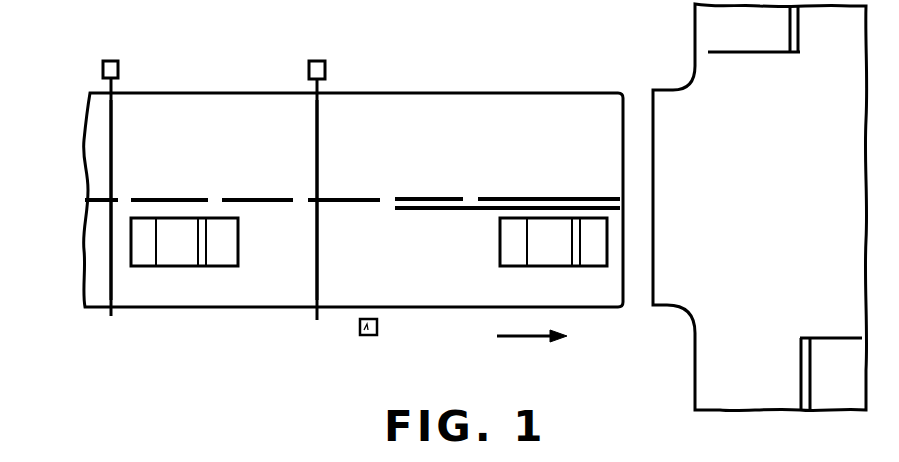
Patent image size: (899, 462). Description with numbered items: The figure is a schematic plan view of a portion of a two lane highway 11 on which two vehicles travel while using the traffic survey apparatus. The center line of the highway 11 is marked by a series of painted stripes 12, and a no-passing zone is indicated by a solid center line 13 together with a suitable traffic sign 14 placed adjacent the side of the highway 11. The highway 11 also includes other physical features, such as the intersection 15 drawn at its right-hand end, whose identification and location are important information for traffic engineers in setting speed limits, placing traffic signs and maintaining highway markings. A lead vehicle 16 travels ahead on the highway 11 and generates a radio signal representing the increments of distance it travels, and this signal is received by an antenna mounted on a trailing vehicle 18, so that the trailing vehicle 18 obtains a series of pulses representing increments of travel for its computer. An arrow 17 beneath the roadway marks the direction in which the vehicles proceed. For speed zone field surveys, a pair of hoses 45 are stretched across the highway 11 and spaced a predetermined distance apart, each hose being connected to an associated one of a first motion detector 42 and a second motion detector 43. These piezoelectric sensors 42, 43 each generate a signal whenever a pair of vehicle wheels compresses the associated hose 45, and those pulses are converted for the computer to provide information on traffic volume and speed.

The two lane highway 11 is at (406, 93).
The painted stripes 12 is at (238, 199).
The solid center line 13 is at (532, 207).
The traffic sign 14 is at (362, 336).
The intersection 15 is at (838, 218).
The lead vehicle 16 is at (505, 248).
The feed direction arrow 17 is at (525, 338).
The trailing vehicle 18 is at (230, 254).
The first motion detector 42 is at (102, 68).
The second motion detector 43 is at (308, 68).
The hoses 45 is at (112, 146).